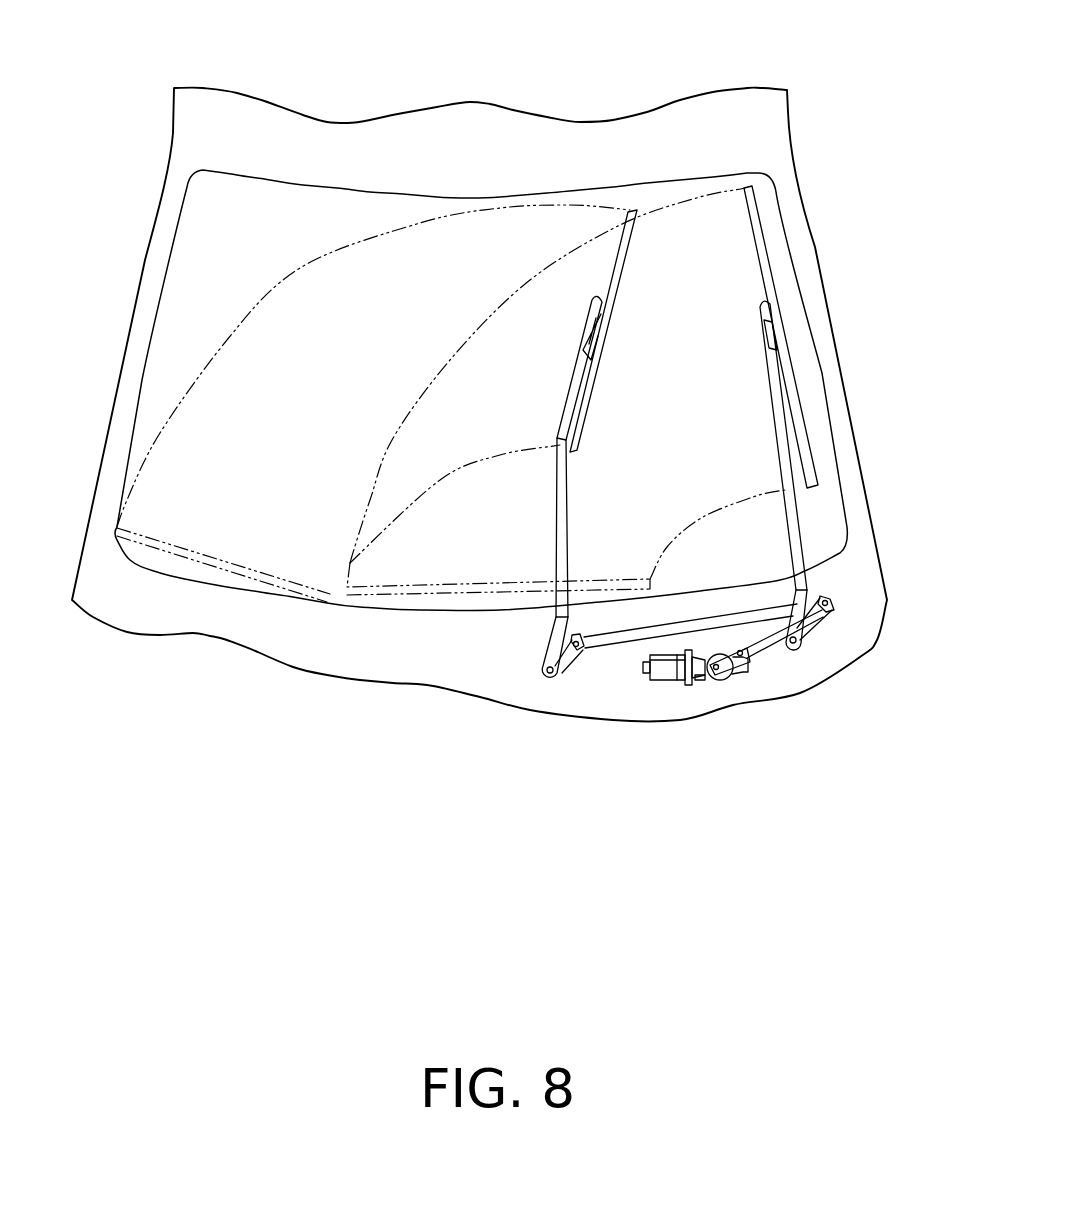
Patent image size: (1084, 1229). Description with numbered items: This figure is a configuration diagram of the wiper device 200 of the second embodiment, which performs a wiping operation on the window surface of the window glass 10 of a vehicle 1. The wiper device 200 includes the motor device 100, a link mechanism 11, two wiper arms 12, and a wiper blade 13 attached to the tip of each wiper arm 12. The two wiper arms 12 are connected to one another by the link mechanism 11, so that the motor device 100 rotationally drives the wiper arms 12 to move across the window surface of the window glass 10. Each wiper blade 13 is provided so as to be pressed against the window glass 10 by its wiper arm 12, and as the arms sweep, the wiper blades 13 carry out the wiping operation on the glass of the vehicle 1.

The vehicle 1 is at (797, 123).
The window glass 10 is at (278, 215).
The link mechanism 11 is at (694, 707).
The wiper arm 12 is at (793, 530).
The wiper blade 13 is at (622, 268).
The motor device 100 is at (606, 662).
The wiper device 200 is at (682, 731).